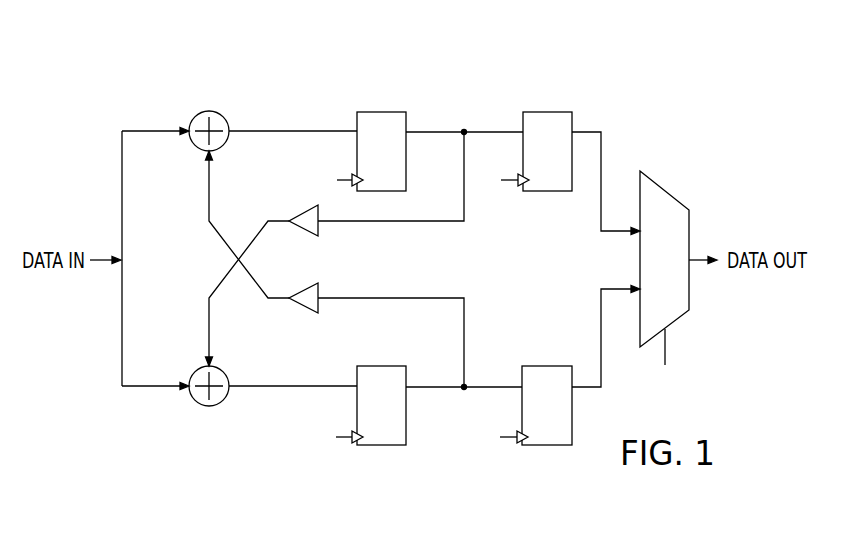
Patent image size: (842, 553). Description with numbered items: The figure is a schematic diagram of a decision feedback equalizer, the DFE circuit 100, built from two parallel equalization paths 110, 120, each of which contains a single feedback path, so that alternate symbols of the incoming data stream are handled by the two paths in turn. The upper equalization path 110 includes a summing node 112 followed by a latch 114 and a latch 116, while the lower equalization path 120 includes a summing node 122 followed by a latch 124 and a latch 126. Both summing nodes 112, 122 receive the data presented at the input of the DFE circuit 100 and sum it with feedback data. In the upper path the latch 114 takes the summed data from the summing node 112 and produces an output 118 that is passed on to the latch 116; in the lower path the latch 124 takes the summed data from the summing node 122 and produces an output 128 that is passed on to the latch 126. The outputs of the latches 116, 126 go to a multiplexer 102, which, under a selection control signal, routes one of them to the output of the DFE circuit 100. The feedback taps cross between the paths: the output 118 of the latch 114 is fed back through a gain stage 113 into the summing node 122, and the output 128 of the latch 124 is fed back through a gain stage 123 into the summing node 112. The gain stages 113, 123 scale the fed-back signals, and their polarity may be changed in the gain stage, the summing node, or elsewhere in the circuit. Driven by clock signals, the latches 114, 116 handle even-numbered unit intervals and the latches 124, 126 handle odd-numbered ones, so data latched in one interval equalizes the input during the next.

The DFE circuit 100 is at (653, 81).
The multiplexer 102 is at (669, 194).
The equalization path 110 is at (328, 90).
The summing node 112 is at (196, 116).
The gain stage 113 is at (299, 215).
The latch 114 is at (381, 112).
The latch 116 is at (547, 112).
The output 118 is at (371, 222).
The equalization path 120 is at (327, 465).
The summing node 122 is at (196, 400).
The gain stage 123 is at (301, 305).
The latch 124 is at (382, 446).
The latch 126 is at (548, 446).
The output 128 is at (411, 298).